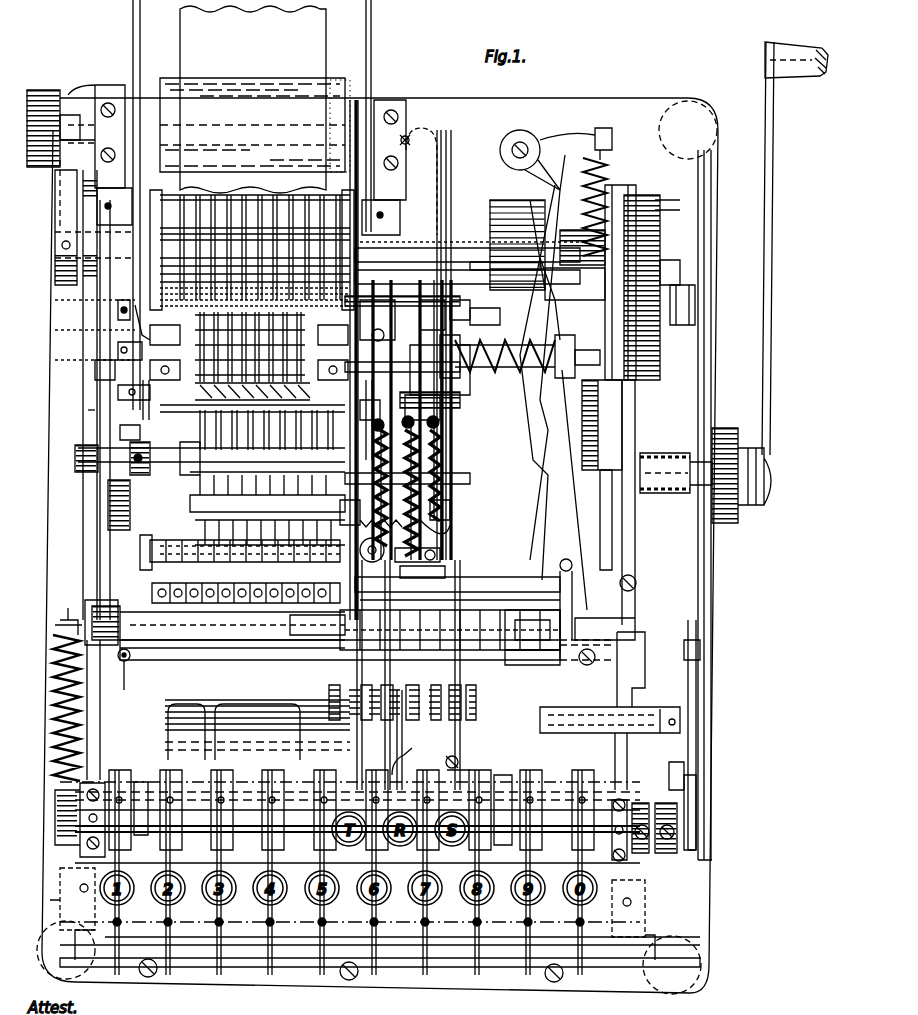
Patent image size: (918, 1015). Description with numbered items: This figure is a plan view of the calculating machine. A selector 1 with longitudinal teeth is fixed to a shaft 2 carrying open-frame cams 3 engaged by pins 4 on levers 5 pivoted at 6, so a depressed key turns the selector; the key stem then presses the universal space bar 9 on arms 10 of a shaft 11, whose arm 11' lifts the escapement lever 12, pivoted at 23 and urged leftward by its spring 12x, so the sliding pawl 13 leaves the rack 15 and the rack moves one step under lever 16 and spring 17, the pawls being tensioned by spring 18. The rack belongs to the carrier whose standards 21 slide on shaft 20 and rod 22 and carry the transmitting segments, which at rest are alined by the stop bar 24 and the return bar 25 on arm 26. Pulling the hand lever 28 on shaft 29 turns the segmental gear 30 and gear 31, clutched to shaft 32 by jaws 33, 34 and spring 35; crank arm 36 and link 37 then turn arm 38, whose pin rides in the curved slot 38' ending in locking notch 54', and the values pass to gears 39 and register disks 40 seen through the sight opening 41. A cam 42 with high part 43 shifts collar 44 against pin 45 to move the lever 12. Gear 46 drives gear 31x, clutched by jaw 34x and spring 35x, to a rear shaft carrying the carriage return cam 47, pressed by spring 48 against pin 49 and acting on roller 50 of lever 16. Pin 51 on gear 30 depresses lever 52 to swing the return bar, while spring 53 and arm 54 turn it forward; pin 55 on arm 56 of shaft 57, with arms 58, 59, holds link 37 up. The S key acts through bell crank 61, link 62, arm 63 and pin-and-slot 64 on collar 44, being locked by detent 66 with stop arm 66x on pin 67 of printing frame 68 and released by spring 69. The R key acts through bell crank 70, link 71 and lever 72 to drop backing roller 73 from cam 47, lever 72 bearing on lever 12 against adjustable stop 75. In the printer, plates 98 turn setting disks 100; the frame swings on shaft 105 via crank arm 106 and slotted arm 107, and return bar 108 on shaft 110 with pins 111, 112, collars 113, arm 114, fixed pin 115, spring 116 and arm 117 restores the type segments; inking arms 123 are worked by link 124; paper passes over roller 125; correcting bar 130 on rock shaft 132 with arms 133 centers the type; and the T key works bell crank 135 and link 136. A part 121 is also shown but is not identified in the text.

The selector 1 is at (175, 738).
The selector shaft 2 is at (150, 838).
The cams 3 is at (130, 790).
The pins 4 is at (150, 792).
The levers 5 is at (125, 910).
The lever pivot 6 is at (395, 970).
The universal space bar 9 is at (500, 838).
The arms 10 is at (75, 870).
The space bar shaft 11 is at (350, 811).
The arm 11' is at (398, 675).
The escapement lever 12 is at (425, 130).
The escapement lever spring 12x is at (339, 512).
The upper sliding pawl 13 is at (440, 555).
The rack 15 is at (528, 622).
The pivoted return lever 16 is at (550, 510).
The spring 17 is at (610, 190).
The pawl spring 18 is at (445, 570).
The transmitting segment shaft 20 is at (296, 635).
The standards 21 is at (335, 648).
The guide rod 22 is at (246, 640).
The escapement lever pivot 23 is at (406, 136).
The stop bar 24 is at (528, 665).
The alining or return bar 25 is at (500, 576).
The arm 26 is at (560, 566).
The hand lever 28 is at (770, 304).
The hand lever shaft 29 is at (772, 478).
The segmental gear 30 is at (632, 434).
The gear 31 is at (640, 410).
The gear 31x is at (625, 215).
The front shaft 32 is at (490, 376).
The clutch jaw 33 is at (560, 300).
The clutch jaw 34 is at (576, 372).
The clutch jaw 34x is at (575, 240).
The spring 35 is at (556, 378).
The spring 35x is at (575, 290).
The crank arm 36 is at (700, 318).
The link 37 is at (705, 592).
The arm 38 is at (674, 826).
The curved slot 38' is at (713, 812).
The gears 39 is at (160, 578).
The register disks 40 is at (150, 556).
The sight opening 41 is at (205, 612).
The cam 42 is at (440, 404).
The lateral high part 43 is at (422, 330).
The collar 44 is at (440, 372).
The pin 45 is at (488, 325).
The gear 46 is at (662, 272).
The carriage return cam 47 is at (490, 215).
The spring 48 is at (452, 246).
The pin 49 is at (492, 272).
The roller 50 is at (544, 292).
The pin 51 is at (578, 508).
The lever 52 is at (583, 520).
The spring 53 is at (95, 694).
The arm 54 is at (125, 648).
The locking notch 54' is at (711, 735).
The pin 55 is at (688, 640).
The arm 56 is at (680, 672).
The shaft 57 is at (682, 718).
The short arm 58 is at (575, 690).
The arm 59 is at (556, 668).
The bell crank lever 61 is at (460, 766).
The link 62 is at (460, 726).
The arm 63 is at (420, 426).
The pin and slot connection 64 is at (467, 317).
The detent 66 is at (450, 508).
The short arm of detent 66x is at (450, 528).
The pin 67 is at (476, 485).
The printing frame 68 is at (148, 412).
The spring 69 is at (430, 455).
The bell crank lever 70 is at (392, 770).
The link 71 is at (442, 160).
The backing-up lever 72 is at (449, 345).
The backing roller 73 is at (449, 345).
The adjustable stop 75 is at (362, 542).
The plate 98 is at (195, 410).
The setting disk 100 is at (215, 160).
The printing frame shaft 105 is at (55, 260).
The crank arm 106 is at (75, 152).
The slotted arm 107 is at (58, 175).
The return bar 108 is at (150, 428).
The type segment shaft 110 is at (110, 380).
The pins 111 is at (252, 262).
The pins 112 is at (250, 347).
The collars 113 is at (254, 395).
The arm 114 is at (118, 350).
The fixed pin 115 is at (118, 308).
The spring 116 is at (377, 320).
The arm 117 is at (378, 420).
The pins 121 is at (277, 427).
The arms 123 is at (132, 394).
The link 124 is at (135, 322).
The paper roller 125 is at (335, 95).
The correcting or alining bar 130 is at (267, 508).
The rock shaft 132 is at (80, 472).
The arms 133 is at (90, 417).
The bell crank lever 135 is at (312, 752).
The link 136 is at (318, 710).